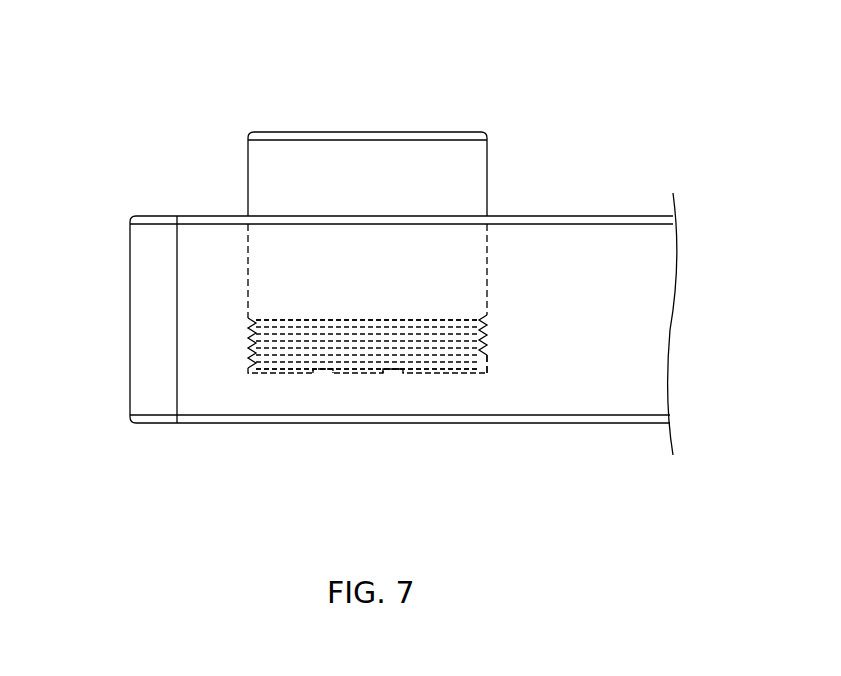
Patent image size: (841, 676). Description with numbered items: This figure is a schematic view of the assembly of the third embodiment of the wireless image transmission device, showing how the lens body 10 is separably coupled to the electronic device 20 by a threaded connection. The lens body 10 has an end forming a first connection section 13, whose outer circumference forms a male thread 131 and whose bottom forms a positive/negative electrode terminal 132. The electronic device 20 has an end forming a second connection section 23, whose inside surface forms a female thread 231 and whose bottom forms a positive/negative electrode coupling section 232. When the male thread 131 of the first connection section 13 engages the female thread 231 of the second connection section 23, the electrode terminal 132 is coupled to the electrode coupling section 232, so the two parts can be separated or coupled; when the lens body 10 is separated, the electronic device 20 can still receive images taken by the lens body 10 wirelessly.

The lens body 10 is at (267, 165).
The electronic device 20 is at (653, 247).
The first connection section 13 is at (406, 424).
The male thread 131 is at (502, 408).
The positive/negative electrode terminal 132 is at (313, 345).
The second connection section 23 is at (254, 317).
The female thread 231 is at (270, 322).
The positive/negative electrode coupling section 232 is at (397, 367).